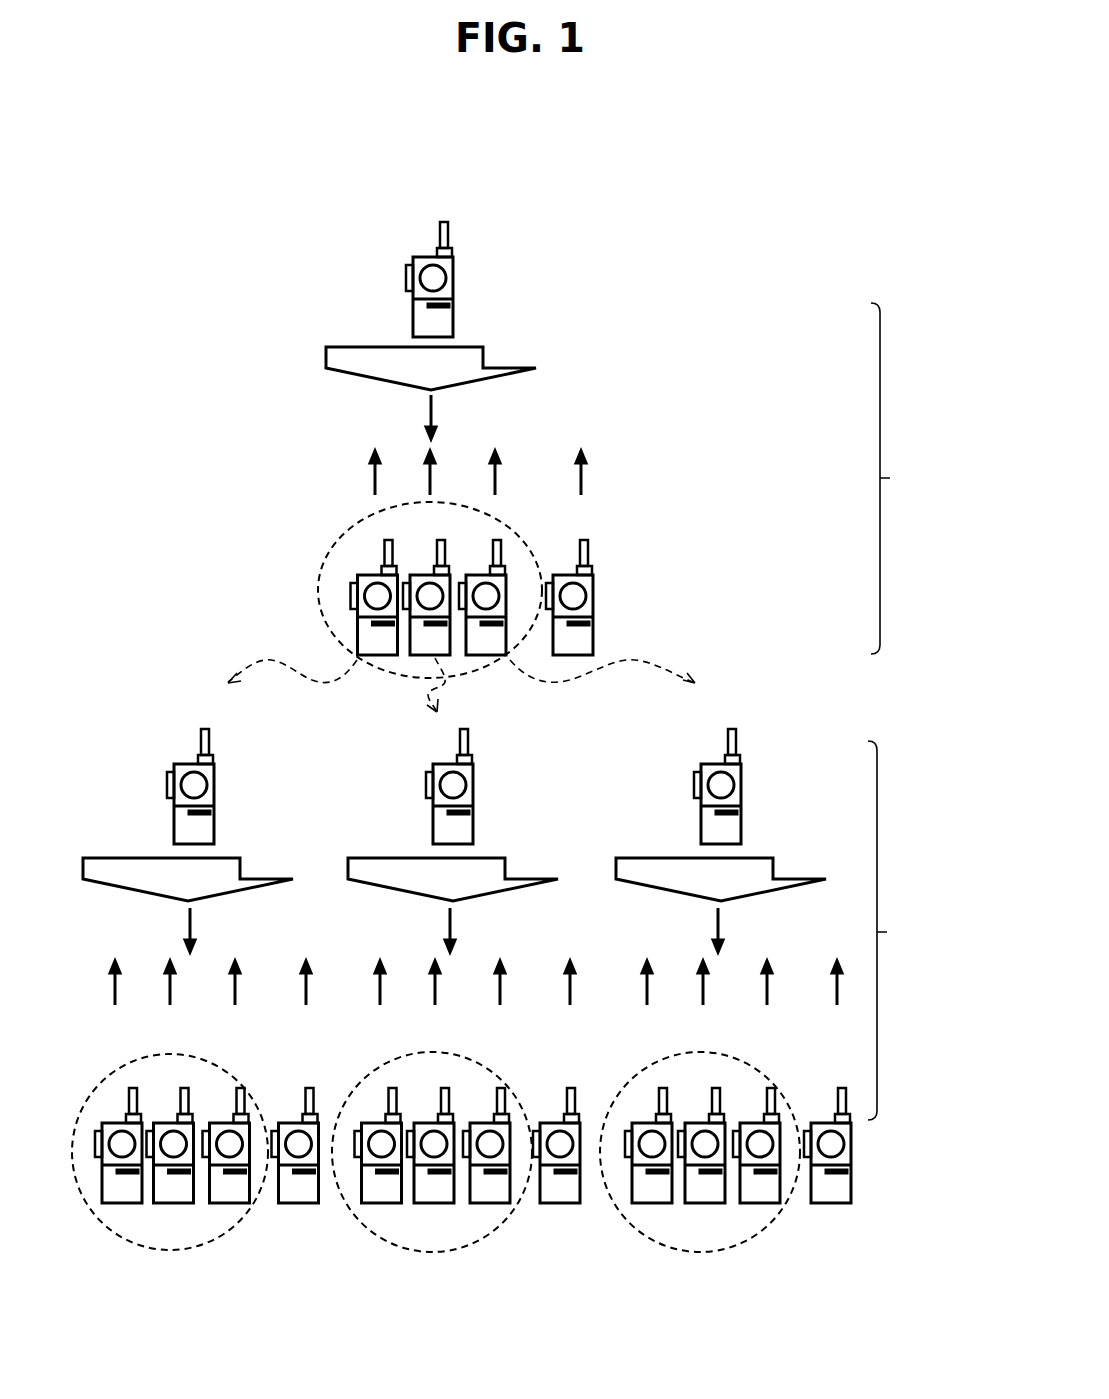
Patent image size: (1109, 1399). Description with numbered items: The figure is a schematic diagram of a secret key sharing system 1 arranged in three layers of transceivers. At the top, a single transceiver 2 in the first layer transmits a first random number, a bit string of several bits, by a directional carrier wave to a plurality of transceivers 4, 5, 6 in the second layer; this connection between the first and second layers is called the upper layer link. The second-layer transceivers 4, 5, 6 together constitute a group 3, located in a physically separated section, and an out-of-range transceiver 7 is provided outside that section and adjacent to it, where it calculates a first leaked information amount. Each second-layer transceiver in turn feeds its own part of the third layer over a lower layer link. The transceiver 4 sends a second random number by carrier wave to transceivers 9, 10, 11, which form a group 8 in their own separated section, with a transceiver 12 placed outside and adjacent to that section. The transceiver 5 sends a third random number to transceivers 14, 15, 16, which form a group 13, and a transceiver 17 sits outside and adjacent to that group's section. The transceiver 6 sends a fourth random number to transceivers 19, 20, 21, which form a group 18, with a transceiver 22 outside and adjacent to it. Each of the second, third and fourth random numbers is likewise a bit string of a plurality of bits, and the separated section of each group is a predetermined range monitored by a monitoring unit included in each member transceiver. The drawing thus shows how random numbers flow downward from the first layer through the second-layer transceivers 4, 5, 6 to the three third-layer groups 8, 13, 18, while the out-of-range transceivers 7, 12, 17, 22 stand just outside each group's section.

The secret key sharing system 1 is at (935, 218).
The transceiver in the first layer 2 is at (442, 223).
The group 3 is at (327, 548).
The transceiver in the second layer 4 is at (366, 573).
The transceiver in the second layer 5 is at (420, 573).
The transceiver in the second layer 6 is at (478, 573).
The out-of-range transceiver 7 is at (565, 573).
The group 8 is at (188, 1053).
The transceiver in the third layer 9 is at (104, 1122).
The transceiver in the third layer 10 is at (156, 1122).
The transceiver in the third layer 11 is at (212, 1122).
The transceiver 12 is at (281, 1122).
The group 13 is at (448, 1053).
The transceiver in the third layer 14 is at (364, 1122).
The transceiver in the third layer 15 is at (417, 1122).
The transceiver in the third layer 16 is at (473, 1122).
The transceiver 17 is at (543, 1122).
The group 18 is at (715, 1053).
The transceiver in the third layer 19 is at (634, 1122).
The transceiver in the third layer 20 is at (687, 1122).
The transceiver in the third layer 21 is at (742, 1122).
The transceiver 22 is at (813, 1122).